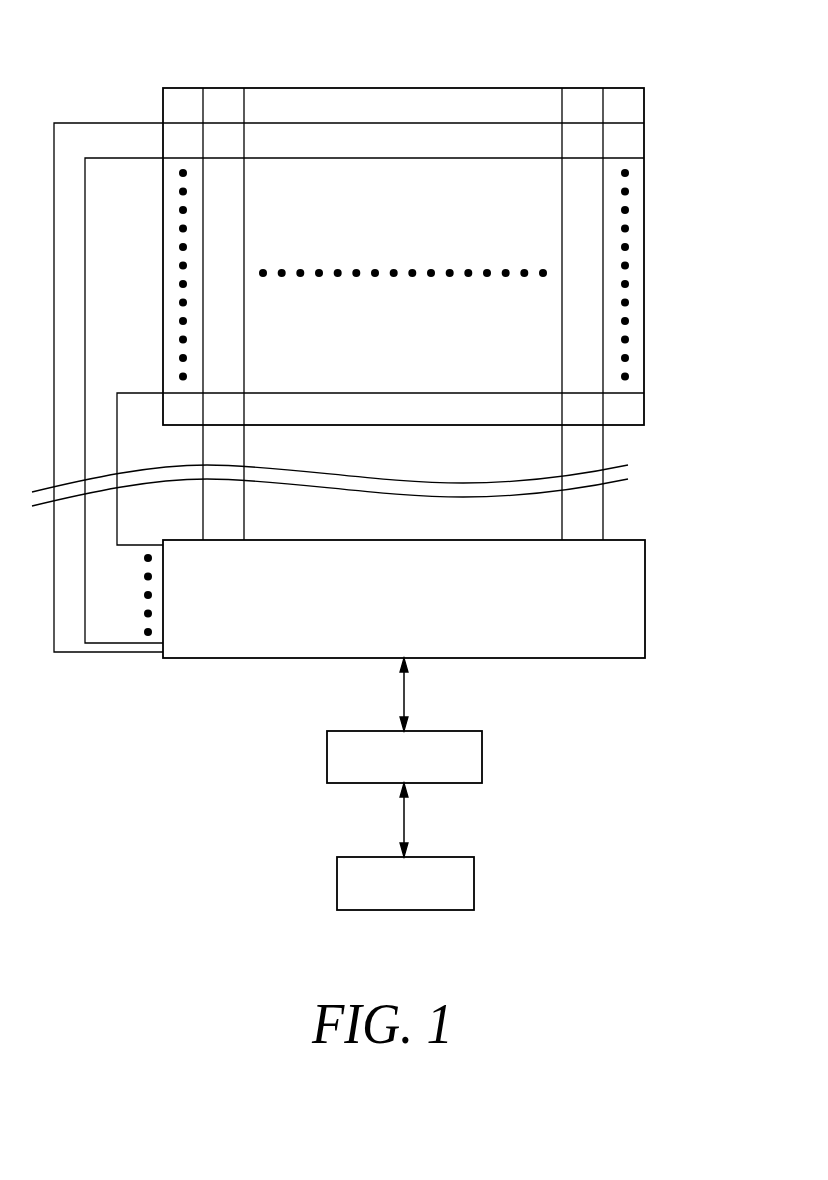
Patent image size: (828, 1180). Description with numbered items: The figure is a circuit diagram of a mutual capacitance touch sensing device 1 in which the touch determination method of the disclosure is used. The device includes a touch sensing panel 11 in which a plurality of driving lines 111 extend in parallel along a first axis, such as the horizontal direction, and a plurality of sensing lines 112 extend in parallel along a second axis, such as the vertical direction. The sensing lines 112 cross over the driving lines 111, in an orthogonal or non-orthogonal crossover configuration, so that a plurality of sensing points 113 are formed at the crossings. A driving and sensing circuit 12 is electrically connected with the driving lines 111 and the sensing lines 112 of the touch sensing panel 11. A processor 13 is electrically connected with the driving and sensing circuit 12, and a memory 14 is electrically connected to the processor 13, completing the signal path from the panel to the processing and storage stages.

The mutual capacitance touch sensing device 1 is at (623, 66).
The touch sensing panel 11 is at (635, 301).
The driving lines 111 is at (101, 123).
The sensing lines 112 is at (605, 510).
The sensing points 113 is at (244, 123).
The driving and sensing circuit 12 is at (645, 598).
The processor 13 is at (483, 758).
The memory 14 is at (474, 885).